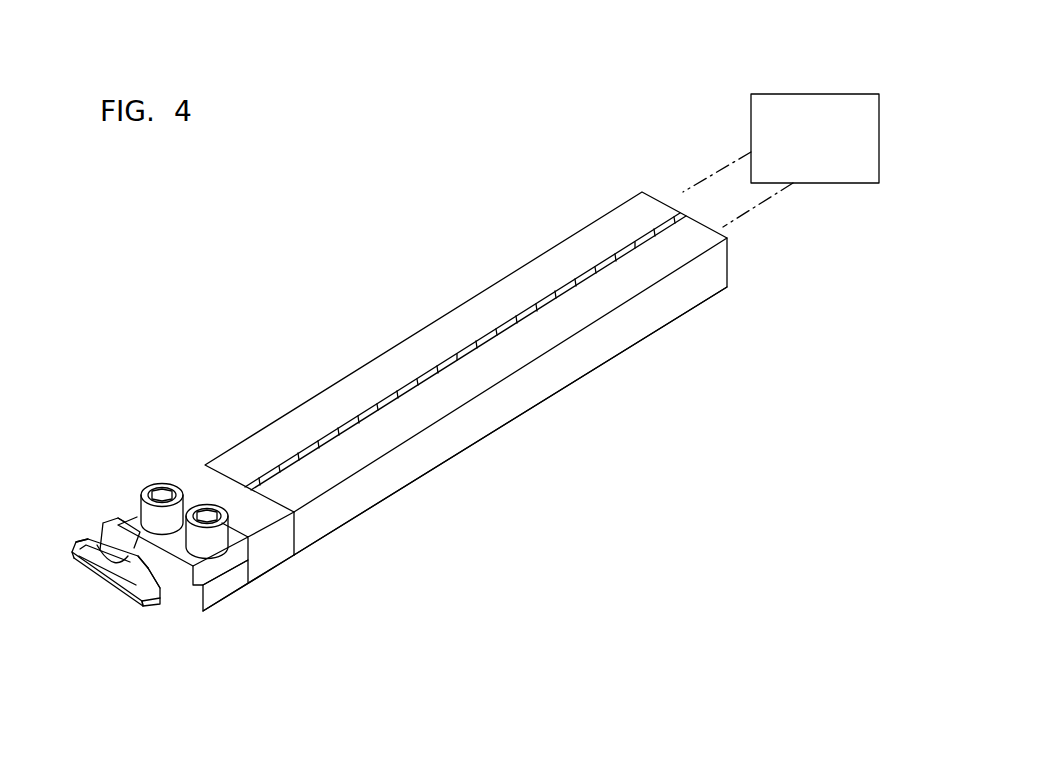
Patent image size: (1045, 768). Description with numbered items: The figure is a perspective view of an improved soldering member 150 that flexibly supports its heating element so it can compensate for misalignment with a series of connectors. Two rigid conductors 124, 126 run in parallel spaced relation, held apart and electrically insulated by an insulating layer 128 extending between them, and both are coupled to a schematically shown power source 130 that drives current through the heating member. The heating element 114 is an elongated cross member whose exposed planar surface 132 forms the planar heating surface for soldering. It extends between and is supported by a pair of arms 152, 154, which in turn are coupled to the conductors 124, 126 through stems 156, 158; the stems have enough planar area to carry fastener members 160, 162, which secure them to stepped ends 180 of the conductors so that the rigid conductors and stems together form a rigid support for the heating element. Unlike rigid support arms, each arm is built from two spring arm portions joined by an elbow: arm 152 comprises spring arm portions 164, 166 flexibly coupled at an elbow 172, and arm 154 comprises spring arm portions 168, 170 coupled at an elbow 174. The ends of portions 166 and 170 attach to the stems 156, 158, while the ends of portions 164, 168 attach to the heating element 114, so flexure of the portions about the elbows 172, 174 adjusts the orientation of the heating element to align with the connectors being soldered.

The heating element 114 is at (97, 582).
The rigid conductor 124 is at (527, 263).
The rigid conductor 126 is at (565, 361).
The insulating layer 128 is at (377, 403).
The power source 130 is at (818, 93).
The planar surface 132 is at (127, 592).
The soldering member 150 is at (218, 466).
The arm 152 is at (108, 530).
The arm 154 is at (166, 584).
The stem 156 is at (130, 540).
The stem 158 is at (233, 550).
The fastener member 160 is at (172, 488).
The fastener member 162 is at (215, 516).
The spring arm portion 164 is at (100, 566).
The spring arm portion 166 is at (122, 520).
The spring arm portion 168 is at (147, 579).
The spring arm portion 170 is at (212, 586).
The elbow 172 is at (97, 545).
The elbow 174 is at (140, 593).
The stepped end 180 is at (230, 582).